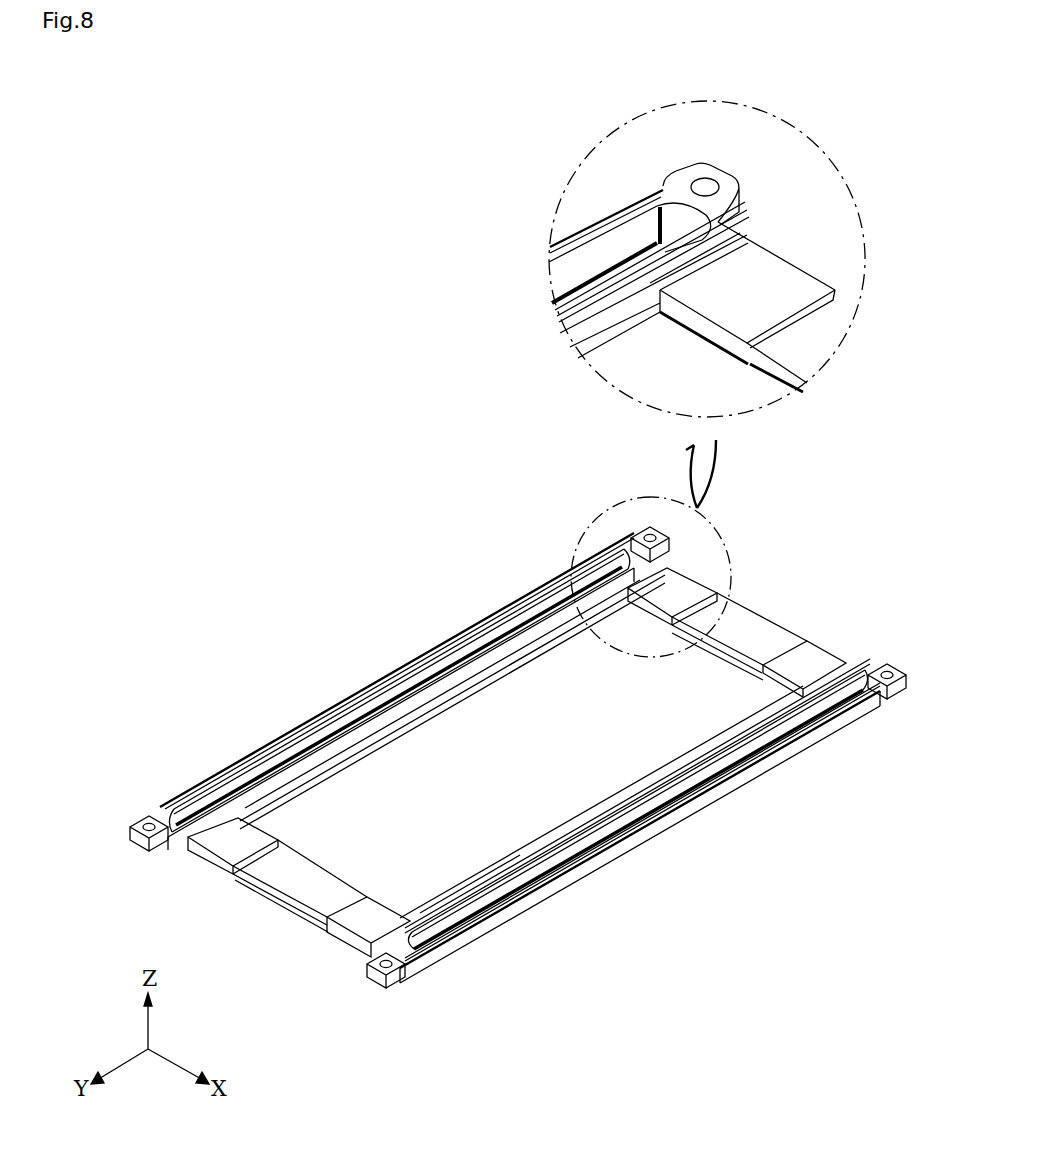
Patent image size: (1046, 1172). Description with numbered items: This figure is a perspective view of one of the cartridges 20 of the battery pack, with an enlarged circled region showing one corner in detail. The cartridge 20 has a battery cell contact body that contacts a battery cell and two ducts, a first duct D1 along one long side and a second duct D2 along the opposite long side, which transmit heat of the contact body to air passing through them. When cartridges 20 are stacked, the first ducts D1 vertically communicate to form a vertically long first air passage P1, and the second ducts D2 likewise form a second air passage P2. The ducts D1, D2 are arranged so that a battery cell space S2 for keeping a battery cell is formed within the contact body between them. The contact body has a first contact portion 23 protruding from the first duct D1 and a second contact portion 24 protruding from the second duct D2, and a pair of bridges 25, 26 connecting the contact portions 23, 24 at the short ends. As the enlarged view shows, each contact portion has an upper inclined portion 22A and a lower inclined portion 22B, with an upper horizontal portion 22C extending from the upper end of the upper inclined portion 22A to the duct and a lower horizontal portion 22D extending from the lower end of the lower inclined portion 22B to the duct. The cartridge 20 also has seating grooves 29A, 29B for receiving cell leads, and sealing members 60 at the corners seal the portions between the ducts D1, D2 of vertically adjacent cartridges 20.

The cartridge 20 is at (551, 542).
The upper inclined portion 22A is at (707, 280).
The lower inclined portion 22B is at (750, 305).
The upper horizontal portion 22C is at (638, 241).
The lower horizontal portion 22D is at (622, 337).
The first contact portion 23 is at (354, 743).
The second contact portion 24 is at (630, 788).
The bridge 25 is at (336, 943).
The bridge 26 is at (809, 641).
The seating groove 29A is at (274, 883).
The seating groove 29B is at (239, 884).
The sealing member 60 is at (152, 811).
The first duct D1 is at (289, 746).
The second duct D2 is at (691, 771).
The first air passage P1 is at (248, 774).
The second air passage P2 is at (552, 856).
The battery cell space S2 is at (464, 859).